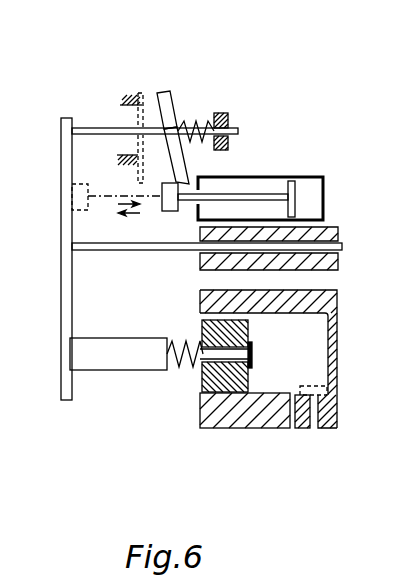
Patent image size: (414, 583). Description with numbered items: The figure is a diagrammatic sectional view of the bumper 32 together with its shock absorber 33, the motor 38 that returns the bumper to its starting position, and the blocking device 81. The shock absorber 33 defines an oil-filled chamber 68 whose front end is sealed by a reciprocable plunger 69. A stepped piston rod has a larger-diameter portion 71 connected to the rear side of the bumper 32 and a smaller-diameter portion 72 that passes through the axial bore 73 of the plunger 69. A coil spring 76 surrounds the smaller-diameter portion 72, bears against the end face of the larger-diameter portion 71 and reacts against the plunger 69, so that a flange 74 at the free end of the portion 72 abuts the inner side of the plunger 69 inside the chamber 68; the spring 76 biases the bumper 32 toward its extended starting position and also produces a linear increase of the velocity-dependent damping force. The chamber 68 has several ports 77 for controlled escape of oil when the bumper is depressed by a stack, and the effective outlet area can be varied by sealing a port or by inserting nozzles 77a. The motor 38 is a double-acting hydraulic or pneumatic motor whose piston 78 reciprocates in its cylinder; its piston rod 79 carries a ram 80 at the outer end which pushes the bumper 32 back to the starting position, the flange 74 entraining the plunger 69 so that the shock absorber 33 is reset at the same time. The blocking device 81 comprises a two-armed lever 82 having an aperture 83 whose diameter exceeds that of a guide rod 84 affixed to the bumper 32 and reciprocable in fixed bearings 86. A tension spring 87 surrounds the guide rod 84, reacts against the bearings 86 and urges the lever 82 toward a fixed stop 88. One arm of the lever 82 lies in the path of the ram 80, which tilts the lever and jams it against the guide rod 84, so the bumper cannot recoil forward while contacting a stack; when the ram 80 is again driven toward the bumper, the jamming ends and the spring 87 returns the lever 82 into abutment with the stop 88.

The bumper 32 is at (61, 296).
The shock absorber 33 is at (177, 413).
The motor 38 is at (318, 195).
The oil-filled chamber 68 is at (322, 356).
The plunger 69 is at (227, 383).
The larger-diameter portion 71 is at (143, 365).
The smaller-diameter portion 72 is at (203, 326).
The axial bore 73 is at (249, 396).
The flange 74 is at (253, 354).
The coil spring 76 is at (183, 345).
The ports 77 is at (302, 430).
The nozzles 77a is at (330, 388).
The piston 78 is at (297, 180).
The piston rod 79 is at (258, 191).
The ram 80 is at (170, 208).
The blocking device 81 is at (183, 83).
The two-armed lever 82 is at (163, 92).
The aperture 83 is at (137, 140).
The guide rod 84 is at (86, 127).
The fixed bearings 86 is at (228, 116).
The tension spring 87 is at (200, 124).
The fixed stop 88 is at (133, 90).